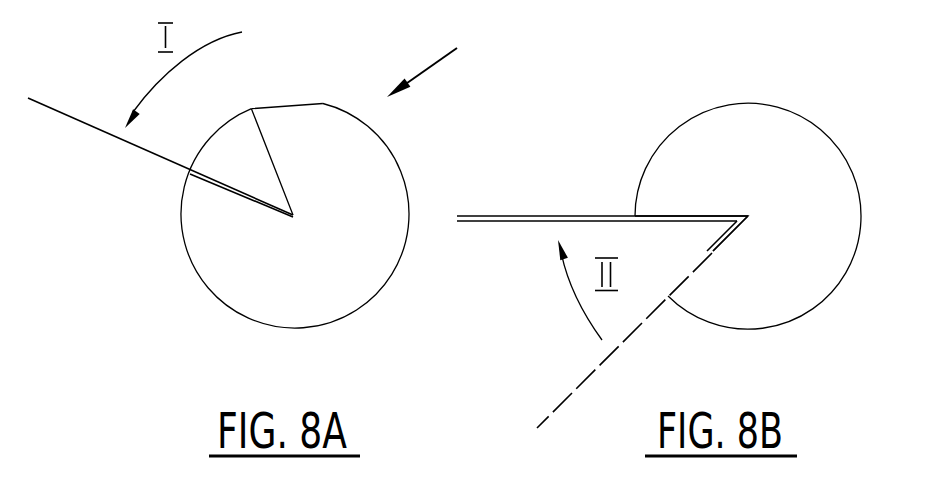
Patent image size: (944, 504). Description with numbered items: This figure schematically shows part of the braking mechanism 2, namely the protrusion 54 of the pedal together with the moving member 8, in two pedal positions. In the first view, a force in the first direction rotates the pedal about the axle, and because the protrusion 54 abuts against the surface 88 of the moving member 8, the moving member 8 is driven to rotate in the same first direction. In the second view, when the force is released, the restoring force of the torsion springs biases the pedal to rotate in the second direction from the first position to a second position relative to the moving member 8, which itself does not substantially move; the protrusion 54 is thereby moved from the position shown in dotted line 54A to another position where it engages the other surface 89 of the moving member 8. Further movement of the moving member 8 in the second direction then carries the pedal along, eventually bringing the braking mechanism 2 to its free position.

In FIG. 8A, the braking mechanism 2 is at (432, 59).
In FIG. 8A, the moving member 8 is at (353, 142).
In FIG. 8B, the moving member 8 is at (735, 138).
In FIG. 8A, the protrusion 54 is at (163, 157).
In FIG. 8B, the protrusion 54 is at (540, 221).
In FIG. 8B, the protrusion in dotted-line position 54A is at (650, 311).
In FIG. 8A, the surface 88 is at (228, 192).
In FIG. 8B, the surface 88 is at (713, 253).
In FIG. 8A, the another surface 89 is at (282, 175).
In FIG. 8B, the another surface 89 is at (683, 217).